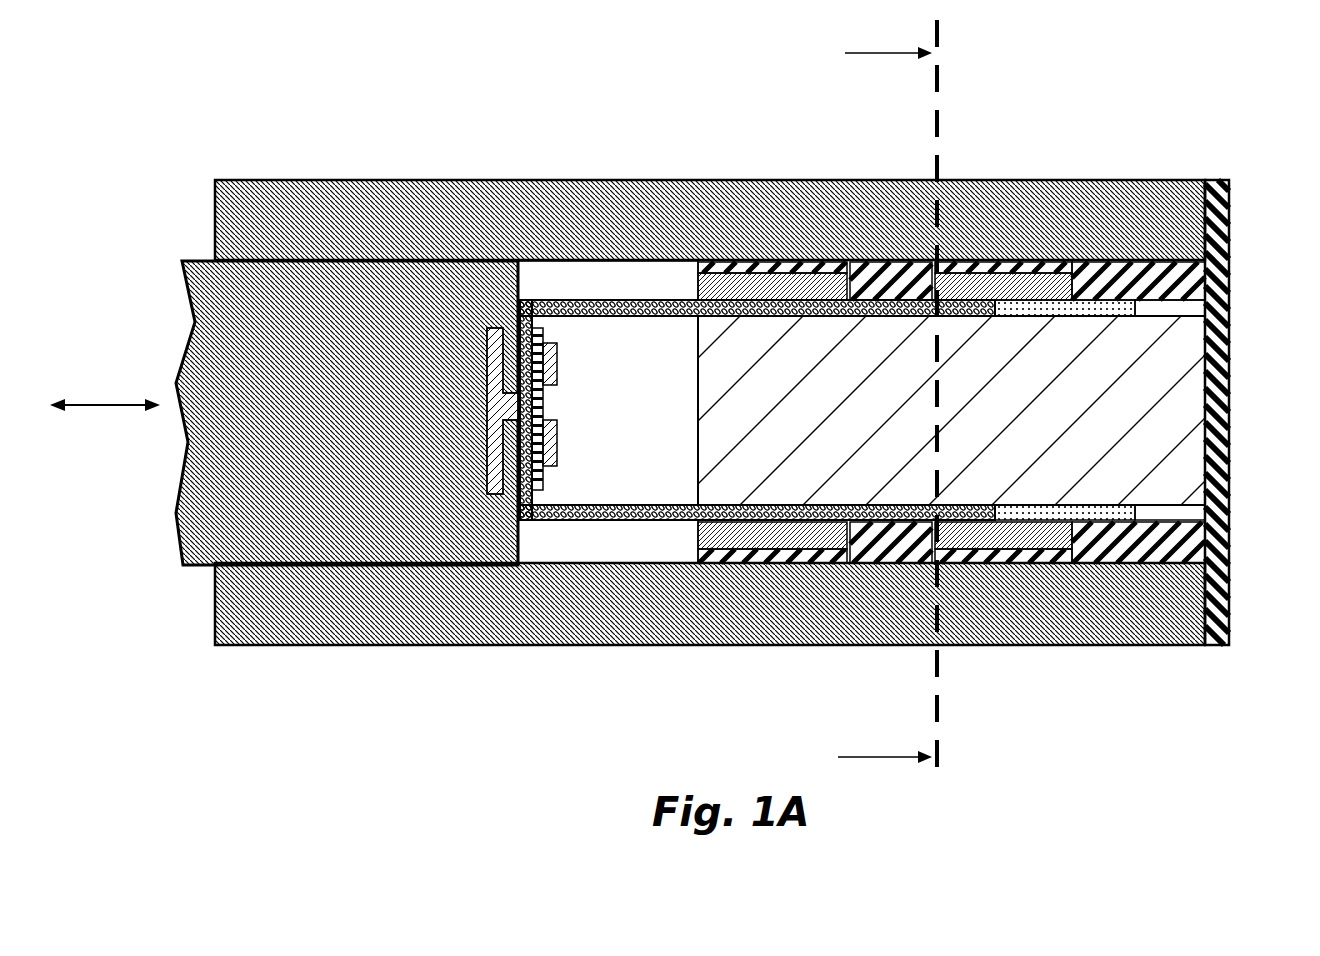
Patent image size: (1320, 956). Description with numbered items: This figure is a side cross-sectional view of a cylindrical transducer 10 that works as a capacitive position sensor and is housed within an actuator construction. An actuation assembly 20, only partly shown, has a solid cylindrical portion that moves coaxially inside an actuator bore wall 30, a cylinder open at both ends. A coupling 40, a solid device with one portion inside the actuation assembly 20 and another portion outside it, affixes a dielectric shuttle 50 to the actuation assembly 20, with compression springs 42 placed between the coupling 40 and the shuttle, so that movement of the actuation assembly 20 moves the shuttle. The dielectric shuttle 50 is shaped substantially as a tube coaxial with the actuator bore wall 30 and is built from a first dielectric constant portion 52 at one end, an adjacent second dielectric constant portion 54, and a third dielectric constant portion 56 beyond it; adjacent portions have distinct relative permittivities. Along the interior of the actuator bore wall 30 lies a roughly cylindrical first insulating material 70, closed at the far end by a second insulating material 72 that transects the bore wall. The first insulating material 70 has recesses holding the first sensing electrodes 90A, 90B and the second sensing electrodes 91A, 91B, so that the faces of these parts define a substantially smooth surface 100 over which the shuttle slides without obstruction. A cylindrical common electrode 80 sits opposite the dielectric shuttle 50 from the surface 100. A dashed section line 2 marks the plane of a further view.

The transducer 10 is at (1195, 337).
The actuation assembly 20 is at (325, 295).
The actuator bore wall 30 is at (448, 198).
The coupling 40 is at (495, 330).
The compression springs 42 is at (560, 385).
The dielectric shuttle 50 is at (690, 480).
The first dielectric constant portion 52 is at (600, 300).
The second dielectric constant portion 54 is at (870, 300).
The third dielectric constant portion 56 is at (1060, 305).
The first insulating material 70 is at (1197, 292).
The second insulating material 72 is at (1212, 432).
The common electrode 80 is at (980, 418).
The first sensing electrode 90A is at (788, 295).
The first sensing electrode 90B is at (790, 540).
The second sensing electrode 91A is at (1000, 290).
The second sensing electrode 91B is at (1000, 540).
The surface 100 is at (688, 292).
The section line 2 is at (887, 410).